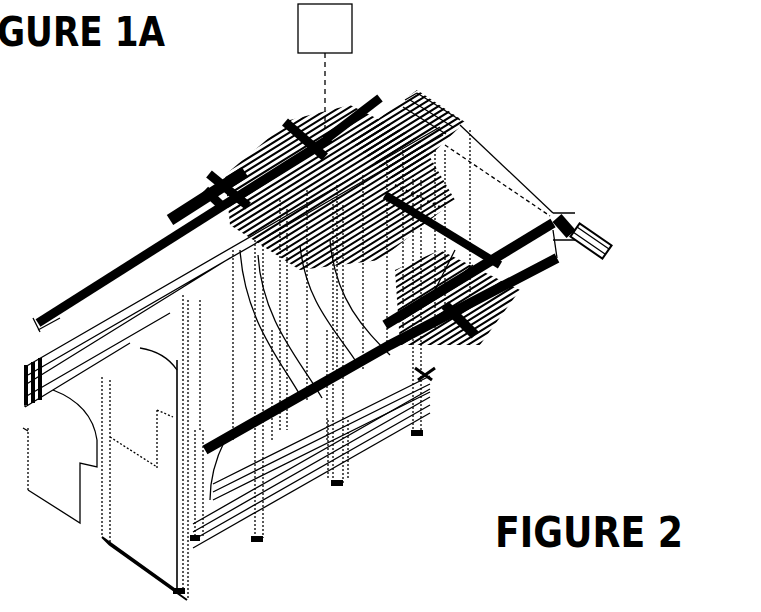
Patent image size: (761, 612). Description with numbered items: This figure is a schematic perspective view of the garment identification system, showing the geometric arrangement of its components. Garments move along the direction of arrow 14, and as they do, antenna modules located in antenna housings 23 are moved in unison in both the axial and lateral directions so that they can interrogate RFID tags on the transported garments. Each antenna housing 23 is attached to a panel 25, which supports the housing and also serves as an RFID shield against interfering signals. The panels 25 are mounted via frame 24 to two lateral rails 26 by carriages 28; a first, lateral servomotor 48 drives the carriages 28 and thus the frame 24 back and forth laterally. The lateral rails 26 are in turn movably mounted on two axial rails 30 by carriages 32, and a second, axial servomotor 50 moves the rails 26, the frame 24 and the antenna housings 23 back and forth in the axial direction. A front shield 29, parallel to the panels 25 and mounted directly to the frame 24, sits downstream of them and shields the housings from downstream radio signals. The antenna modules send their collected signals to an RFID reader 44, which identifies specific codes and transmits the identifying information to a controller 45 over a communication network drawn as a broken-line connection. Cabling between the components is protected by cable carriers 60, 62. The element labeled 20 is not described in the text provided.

The arrow 14 is at (12, 307).
The side panel 20 is at (138, 446).
The antenna housing 23 is at (330, 477).
The frame 24 is at (397, 436).
The panel 25 is at (424, 426).
The lateral rail 26 is at (292, 124).
The carriage 28 is at (415, 195).
The front shield 29 is at (157, 531).
The axial rail 30 is at (117, 270).
The carriage 32 is at (292, 146).
The RFID reader 44 is at (347, 121).
The controller 45 is at (325, 66).
The first servomotor 48 is at (426, 378).
The second servomotor 50 is at (588, 260).
The cable carrier 60 is at (265, 145).
The cable carrier 62 is at (520, 280).